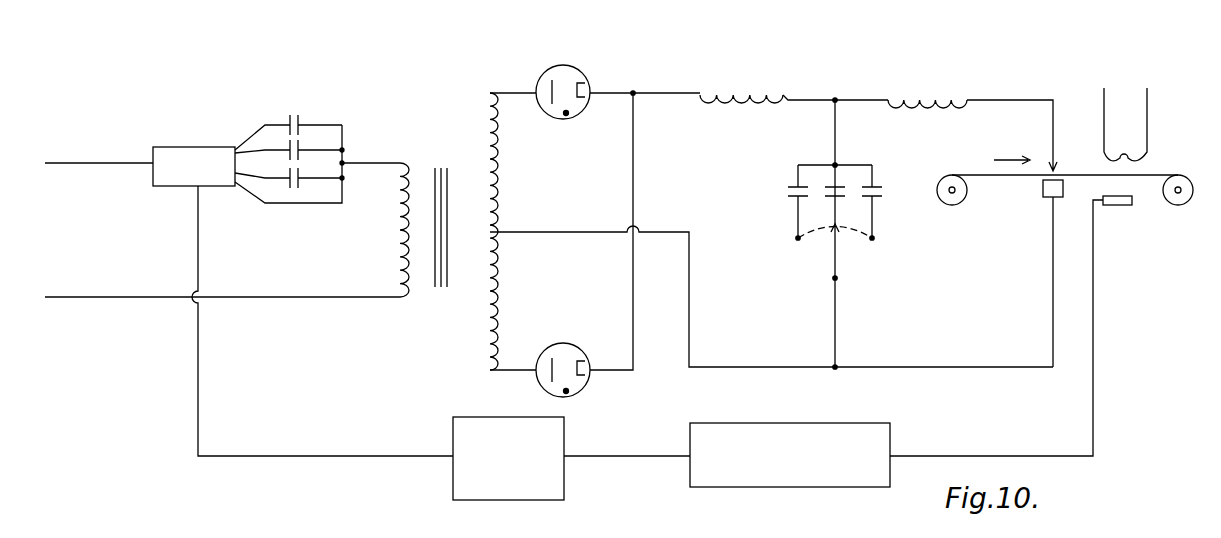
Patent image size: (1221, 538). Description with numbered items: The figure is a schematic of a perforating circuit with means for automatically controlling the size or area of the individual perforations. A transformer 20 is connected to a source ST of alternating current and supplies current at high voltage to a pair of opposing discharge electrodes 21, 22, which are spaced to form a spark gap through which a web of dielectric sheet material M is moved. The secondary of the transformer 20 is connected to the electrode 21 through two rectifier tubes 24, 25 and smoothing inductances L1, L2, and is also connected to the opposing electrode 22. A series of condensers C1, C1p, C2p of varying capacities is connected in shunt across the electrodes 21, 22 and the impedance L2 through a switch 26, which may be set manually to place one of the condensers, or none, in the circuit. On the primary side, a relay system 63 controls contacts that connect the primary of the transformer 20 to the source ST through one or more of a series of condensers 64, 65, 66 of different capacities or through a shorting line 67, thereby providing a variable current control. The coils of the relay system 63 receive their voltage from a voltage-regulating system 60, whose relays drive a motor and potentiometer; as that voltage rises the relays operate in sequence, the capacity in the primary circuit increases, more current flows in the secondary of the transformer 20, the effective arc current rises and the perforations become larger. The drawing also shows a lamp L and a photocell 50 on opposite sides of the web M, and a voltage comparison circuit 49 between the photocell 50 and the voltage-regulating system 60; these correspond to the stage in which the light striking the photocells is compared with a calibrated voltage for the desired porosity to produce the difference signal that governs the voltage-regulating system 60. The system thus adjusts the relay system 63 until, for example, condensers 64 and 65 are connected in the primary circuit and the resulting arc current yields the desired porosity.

The transformer 20 is at (442, 165).
The discharge electrode 21 is at (1050, 141).
The discharge electrode 22 is at (1042, 198).
The rectifier tube 24 is at (575, 119).
The rectifier tube 25 is at (566, 343).
The switch 26 is at (838, 258).
The voltage comparison circuit 49 is at (820, 487).
The photocell / detector 50 is at (1120, 205).
The voltage-regulating system 60 is at (557, 495).
The relay system 63 is at (205, 145).
The condenser 64 is at (300, 123).
The condenser 65 is at (300, 148).
The condenser 66 is at (302, 182).
The shorting line 67 is at (306, 203).
The smoothing inductance L1 is at (752, 92).
The smoothing inductance L2 is at (928, 92).
The condenser C1 is at (787, 191).
The condenser C1p is at (828, 185).
The condenser C2p is at (878, 185).
The web of dielectric sheet material M is at (981, 165).
The lamp L is at (1145, 160).
The source of alternating current ST is at (62, 170).